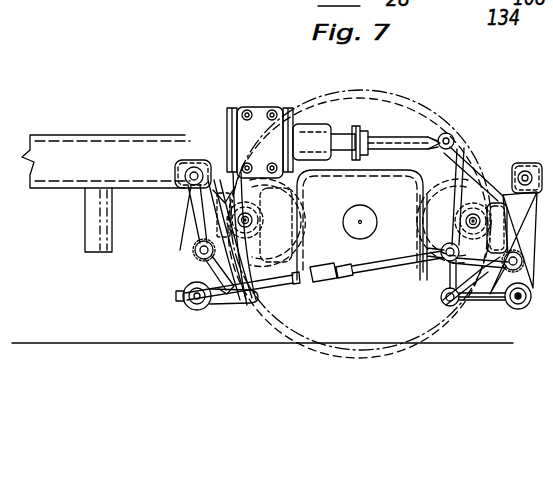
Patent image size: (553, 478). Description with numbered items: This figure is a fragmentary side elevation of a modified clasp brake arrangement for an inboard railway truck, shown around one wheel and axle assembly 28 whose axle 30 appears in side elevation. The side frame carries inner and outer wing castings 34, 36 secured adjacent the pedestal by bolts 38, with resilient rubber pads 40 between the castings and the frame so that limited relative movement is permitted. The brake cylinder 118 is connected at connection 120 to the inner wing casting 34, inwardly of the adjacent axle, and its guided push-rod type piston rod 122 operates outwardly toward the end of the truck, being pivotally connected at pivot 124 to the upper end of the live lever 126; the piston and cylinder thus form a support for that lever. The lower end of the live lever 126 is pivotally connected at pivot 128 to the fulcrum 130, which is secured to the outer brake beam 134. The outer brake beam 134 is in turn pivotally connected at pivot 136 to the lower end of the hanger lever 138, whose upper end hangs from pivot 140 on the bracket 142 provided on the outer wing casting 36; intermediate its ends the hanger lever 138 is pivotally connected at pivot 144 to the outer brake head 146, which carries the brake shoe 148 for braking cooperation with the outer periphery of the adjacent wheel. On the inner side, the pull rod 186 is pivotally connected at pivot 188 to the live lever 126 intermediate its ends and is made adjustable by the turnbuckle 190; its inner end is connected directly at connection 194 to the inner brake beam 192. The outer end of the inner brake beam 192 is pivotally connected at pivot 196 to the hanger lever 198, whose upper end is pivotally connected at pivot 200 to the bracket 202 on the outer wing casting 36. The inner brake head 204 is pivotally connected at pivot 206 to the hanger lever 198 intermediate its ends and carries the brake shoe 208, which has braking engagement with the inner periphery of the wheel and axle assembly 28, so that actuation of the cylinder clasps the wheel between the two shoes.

The wheel and axle assembly 28 is at (306, 325).
The axle 30 is at (360, 220).
The inner wing casting 34 is at (380, 140).
The outer wing casting 36 is at (370, 128).
The bolt 38 is at (302, 210).
The resilient pad 40 is at (305, 220).
The brake cylinder 118 is at (238, 128).
The connection 120 is at (243, 110).
The piston rod 122 is at (322, 128).
The pivotal connection 124 is at (444, 132).
The live lever 126 is at (460, 148).
The pivotal connection 128 is at (441, 300).
The fulcrum 130 is at (473, 315).
The outer brake beam 134 is at (529, 312).
The pivotal connection 136 is at (506, 300).
The hanger lever 138 is at (475, 178).
The pivotal connection 140 is at (480, 205).
The bracket 142 is at (526, 165).
The pivotal connection 144 is at (452, 262).
The outer brake head 146 is at (446, 292).
The brake shoe 148 is at (440, 320).
The pull rod 186 is at (356, 278).
The pivotal connection 188 is at (445, 248).
The turnbuckle 190 is at (318, 266).
The inner brake beam 192 is at (176, 296).
The connection 194 is at (208, 311).
The pivotal connection 196 is at (186, 288).
The hanger lever 198 is at (188, 210).
The pivotal connection 200 is at (180, 165).
The bracket 202 is at (172, 170).
The inner brake head 204 is at (210, 264).
The pivotal connection 206 is at (195, 246).
The brake shoe 208 is at (252, 312).